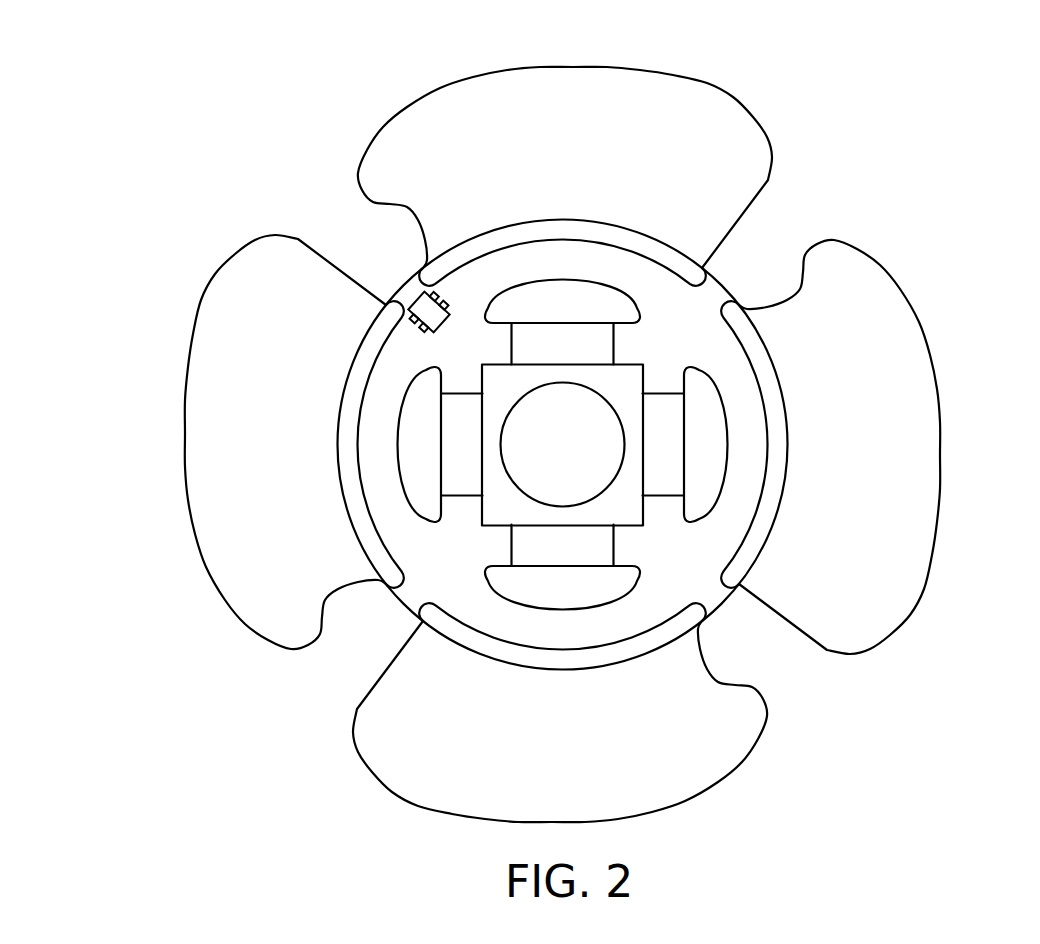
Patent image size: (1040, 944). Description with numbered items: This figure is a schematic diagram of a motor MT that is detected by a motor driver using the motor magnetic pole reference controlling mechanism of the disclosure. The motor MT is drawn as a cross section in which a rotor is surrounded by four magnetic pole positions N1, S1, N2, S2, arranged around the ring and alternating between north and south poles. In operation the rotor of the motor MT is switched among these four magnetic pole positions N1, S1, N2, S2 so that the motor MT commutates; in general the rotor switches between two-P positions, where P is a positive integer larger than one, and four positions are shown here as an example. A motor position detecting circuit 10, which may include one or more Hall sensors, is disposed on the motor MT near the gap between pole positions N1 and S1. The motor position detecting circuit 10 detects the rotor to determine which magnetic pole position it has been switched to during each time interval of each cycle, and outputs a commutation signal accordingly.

The motor MT is at (940, 131).
The magnetic pole position N1 is at (573, 230).
The magnetic pole position S1 is at (347, 413).
The magnetic pole position S2 is at (778, 455).
The magnetic pole position N2 is at (635, 652).
The motor position detecting circuit 10 is at (417, 307).